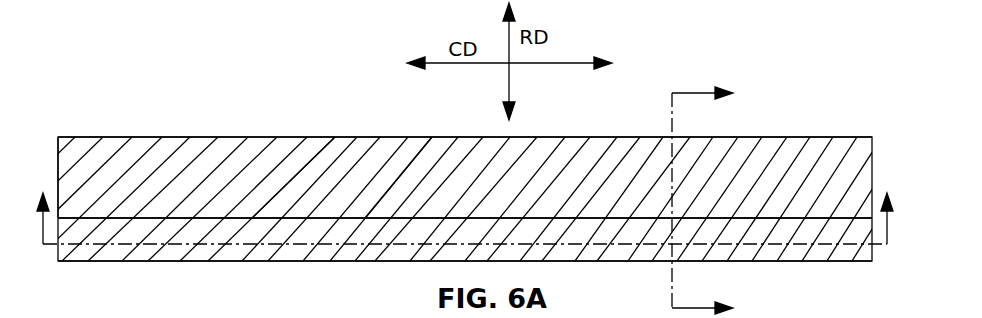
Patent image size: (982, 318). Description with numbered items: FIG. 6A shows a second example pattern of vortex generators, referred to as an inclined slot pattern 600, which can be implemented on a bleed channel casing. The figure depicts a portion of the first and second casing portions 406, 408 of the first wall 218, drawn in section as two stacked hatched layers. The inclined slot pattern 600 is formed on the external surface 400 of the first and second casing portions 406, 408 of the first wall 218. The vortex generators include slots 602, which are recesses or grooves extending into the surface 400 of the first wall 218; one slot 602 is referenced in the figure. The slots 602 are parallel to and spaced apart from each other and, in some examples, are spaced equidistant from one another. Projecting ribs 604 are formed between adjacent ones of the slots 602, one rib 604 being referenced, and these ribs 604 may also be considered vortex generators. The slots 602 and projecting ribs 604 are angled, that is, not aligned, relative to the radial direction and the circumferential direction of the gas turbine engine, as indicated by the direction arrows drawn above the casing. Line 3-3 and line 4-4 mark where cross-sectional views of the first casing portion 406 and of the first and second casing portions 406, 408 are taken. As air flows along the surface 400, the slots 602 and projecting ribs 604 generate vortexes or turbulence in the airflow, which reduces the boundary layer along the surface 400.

The inclined slot pattern 600 is at (133, 98).
The external surface 400 is at (230, 145).
The second casing portion 408 is at (78, 155).
The first casing portion 406 is at (86, 250).
The slot 602 is at (313, 120).
The projecting rib 604 is at (338, 147).
The first wall 218 is at (430, 142).
The line 3- 3 is at (464, 206).
The line 4- 4 is at (712, 200).